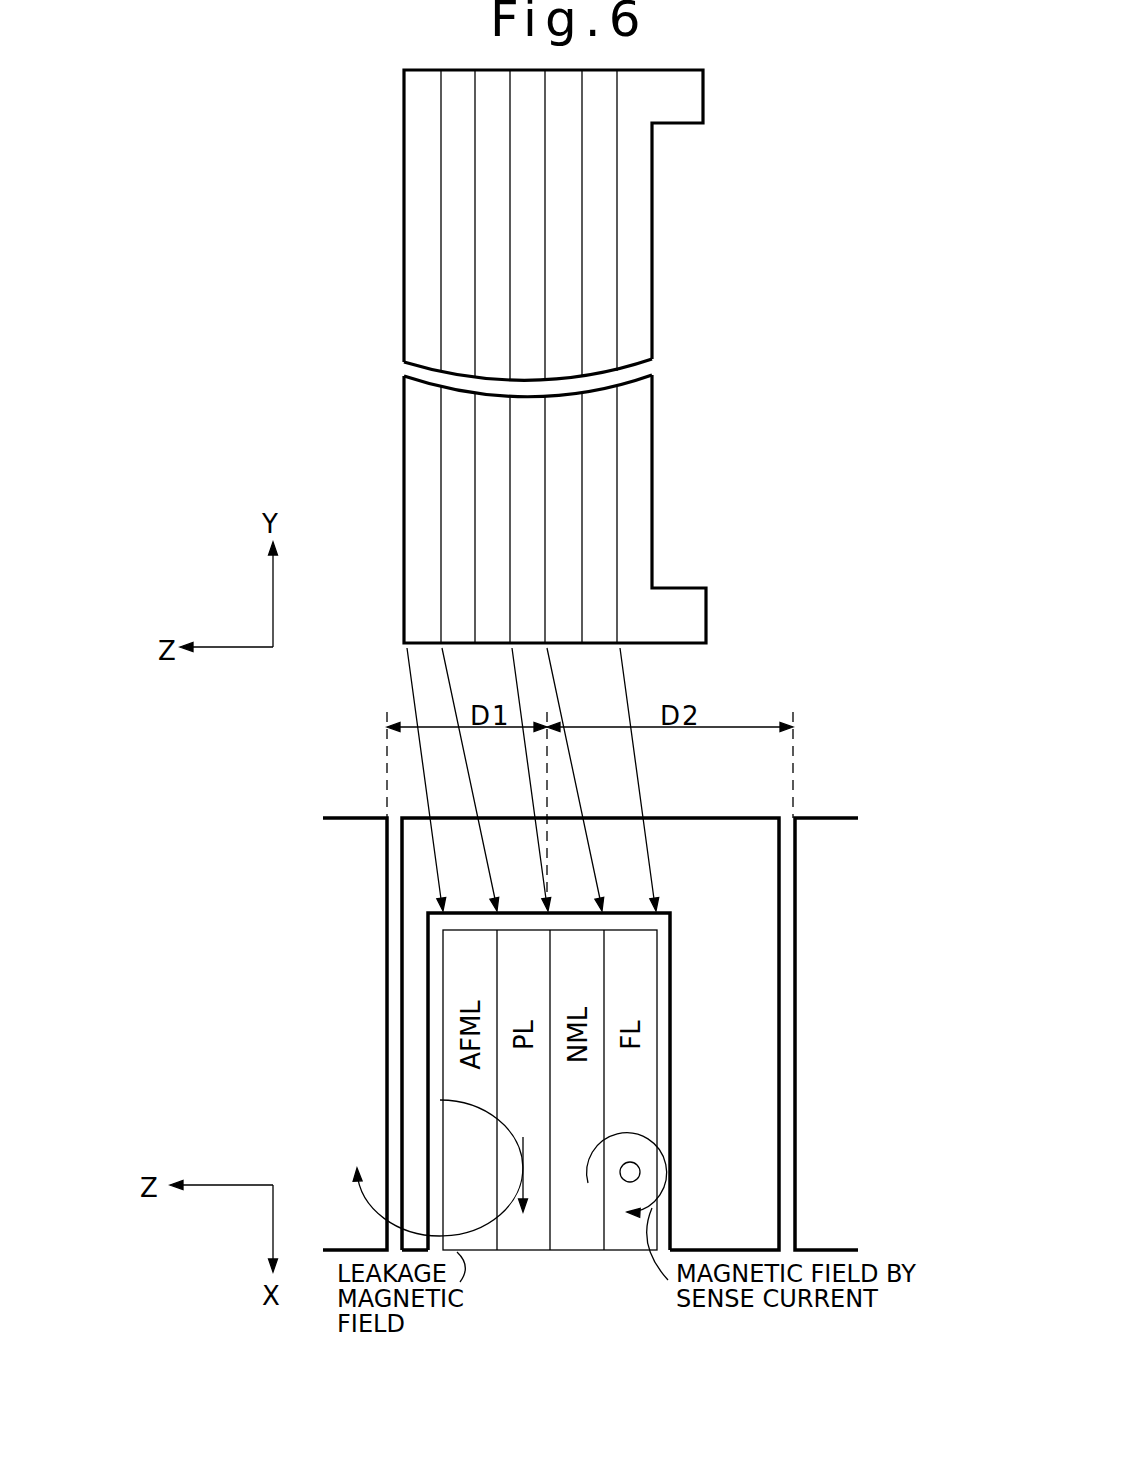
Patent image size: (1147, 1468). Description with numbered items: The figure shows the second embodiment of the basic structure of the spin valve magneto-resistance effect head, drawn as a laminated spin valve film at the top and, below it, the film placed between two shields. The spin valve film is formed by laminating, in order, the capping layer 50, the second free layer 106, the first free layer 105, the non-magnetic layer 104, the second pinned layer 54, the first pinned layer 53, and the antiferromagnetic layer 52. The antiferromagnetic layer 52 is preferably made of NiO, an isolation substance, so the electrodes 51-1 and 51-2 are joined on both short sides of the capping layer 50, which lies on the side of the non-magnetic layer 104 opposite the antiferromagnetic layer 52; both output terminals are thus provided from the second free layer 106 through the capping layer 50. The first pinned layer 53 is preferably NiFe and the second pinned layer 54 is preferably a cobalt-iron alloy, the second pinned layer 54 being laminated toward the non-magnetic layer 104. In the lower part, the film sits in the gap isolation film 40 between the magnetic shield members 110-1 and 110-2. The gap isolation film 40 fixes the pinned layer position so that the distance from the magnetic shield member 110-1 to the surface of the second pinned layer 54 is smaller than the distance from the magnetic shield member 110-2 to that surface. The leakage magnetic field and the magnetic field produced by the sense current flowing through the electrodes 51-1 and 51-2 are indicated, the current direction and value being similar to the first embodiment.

The gap isolation film 40 is at (725, 818).
The capping layer 50 is at (633, 160).
The electrode 51-1 is at (706, 100).
The electrode 51-2 is at (708, 616).
The antiferromagnetic layer 52 is at (418, 168).
The first pinned layer 53 is at (448, 143).
The second pinned layer 54 is at (482, 115).
The non-magnetic layer 104 is at (527, 93).
The first free layer 105 is at (573, 313).
The second free layer 106 is at (597, 178).
The magnetic shield member 110-1 is at (335, 818).
The magnetic shield member 110-2 is at (826, 818).